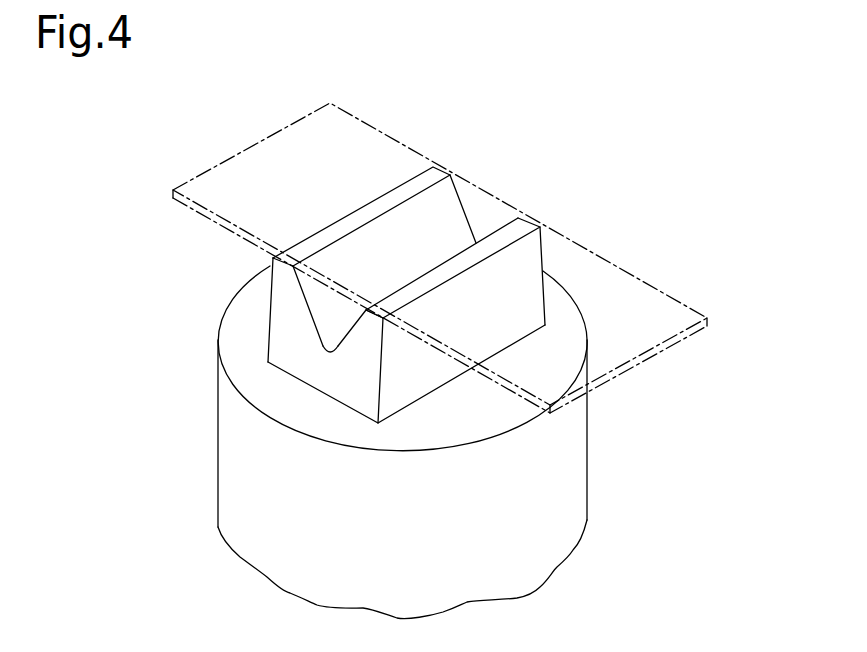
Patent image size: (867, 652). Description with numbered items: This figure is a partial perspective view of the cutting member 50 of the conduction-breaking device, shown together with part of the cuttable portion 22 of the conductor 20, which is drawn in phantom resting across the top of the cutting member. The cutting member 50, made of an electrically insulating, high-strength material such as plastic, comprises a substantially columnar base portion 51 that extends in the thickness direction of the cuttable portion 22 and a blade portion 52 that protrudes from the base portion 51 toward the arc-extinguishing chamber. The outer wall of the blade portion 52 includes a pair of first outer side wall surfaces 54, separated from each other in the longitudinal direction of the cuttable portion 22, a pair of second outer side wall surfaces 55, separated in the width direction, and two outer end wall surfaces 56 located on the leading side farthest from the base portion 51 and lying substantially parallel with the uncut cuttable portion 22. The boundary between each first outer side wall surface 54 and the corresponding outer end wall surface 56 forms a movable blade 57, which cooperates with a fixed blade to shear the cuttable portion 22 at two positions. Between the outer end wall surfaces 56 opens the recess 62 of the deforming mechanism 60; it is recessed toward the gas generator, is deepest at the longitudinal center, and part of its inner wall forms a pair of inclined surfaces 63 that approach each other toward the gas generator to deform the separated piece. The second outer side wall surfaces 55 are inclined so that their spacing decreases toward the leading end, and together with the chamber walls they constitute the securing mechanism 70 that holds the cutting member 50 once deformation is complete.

The conductor 20 is at (489, 258).
The cuttable portion 22 is at (677, 302).
The cutting member 50 is at (158, 326).
The base portion 51 is at (227, 408).
The blade portion 52 is at (270, 347).
The first outer side wall surface 54 is at (270, 290).
The second outer side wall surface 55 is at (333, 390).
The outer end wall surface 56 is at (358, 222).
The movable blade 57 is at (397, 187).
The deforming mechanism 60 is at (419, 282).
The recess 62 is at (483, 222).
The inclined surface 63 is at (322, 310).
The securing mechanism 70 is at (472, 170).